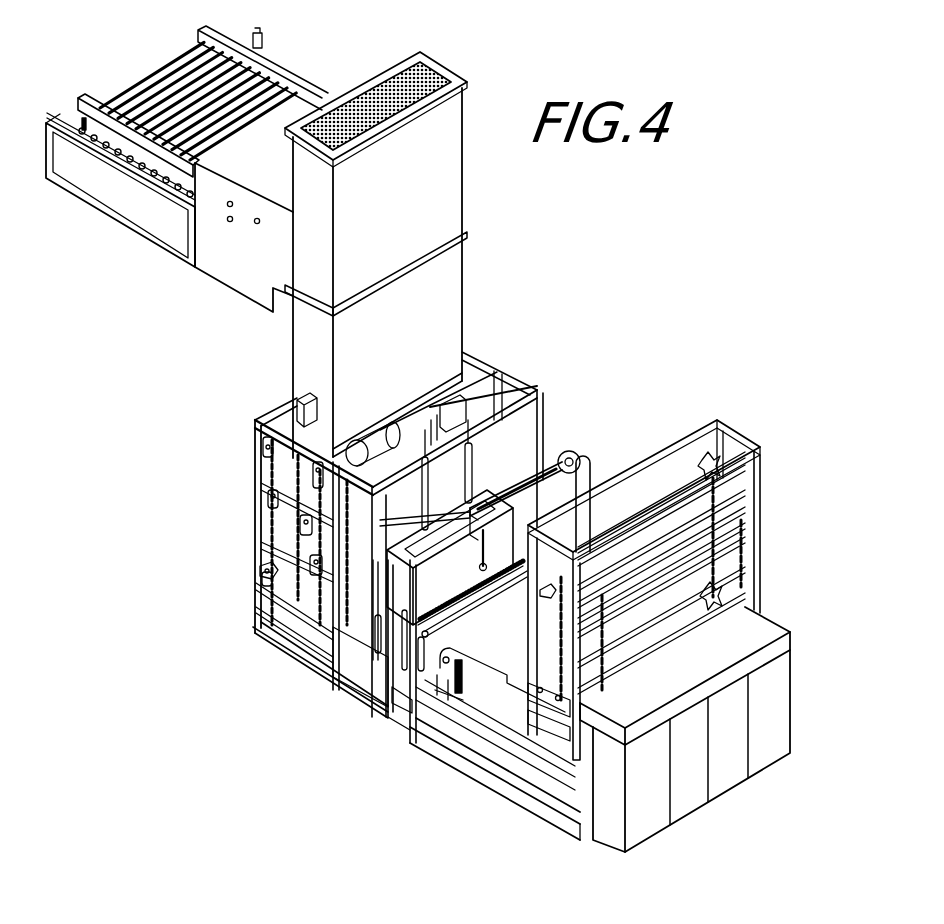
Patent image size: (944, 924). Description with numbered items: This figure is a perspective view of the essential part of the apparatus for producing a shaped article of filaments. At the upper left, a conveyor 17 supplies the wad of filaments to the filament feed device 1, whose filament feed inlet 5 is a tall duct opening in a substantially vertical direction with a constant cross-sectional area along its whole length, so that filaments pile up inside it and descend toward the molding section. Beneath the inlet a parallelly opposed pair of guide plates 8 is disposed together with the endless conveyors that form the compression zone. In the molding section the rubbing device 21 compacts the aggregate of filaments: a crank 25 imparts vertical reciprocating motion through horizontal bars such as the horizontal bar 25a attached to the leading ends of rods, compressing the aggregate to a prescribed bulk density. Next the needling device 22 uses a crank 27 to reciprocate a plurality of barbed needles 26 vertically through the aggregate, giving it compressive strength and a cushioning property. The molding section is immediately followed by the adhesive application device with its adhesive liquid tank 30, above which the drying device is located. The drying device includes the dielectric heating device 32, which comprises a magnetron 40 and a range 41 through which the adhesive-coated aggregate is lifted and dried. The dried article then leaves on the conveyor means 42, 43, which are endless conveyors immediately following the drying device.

The filament feed device 1 is at (472, 212).
The filament feed inlet 5 is at (448, 313).
The guide plates 8 is at (310, 468).
The conveyor 17 is at (140, 88).
The rubbing device 21 is at (523, 430).
The needling device 22 is at (593, 470).
The crank 25 is at (457, 410).
The horizontal bar 25a is at (507, 447).
The needles 26 is at (475, 590).
The crank 27 is at (480, 503).
The adhesive liquid tank 30 is at (537, 770).
The dielectric heating device 32 is at (770, 613).
The magnetron 40 is at (693, 802).
The range 41 is at (783, 648).
The conveyor means 42 is at (564, 624).
The conveyor means 43 is at (750, 543).